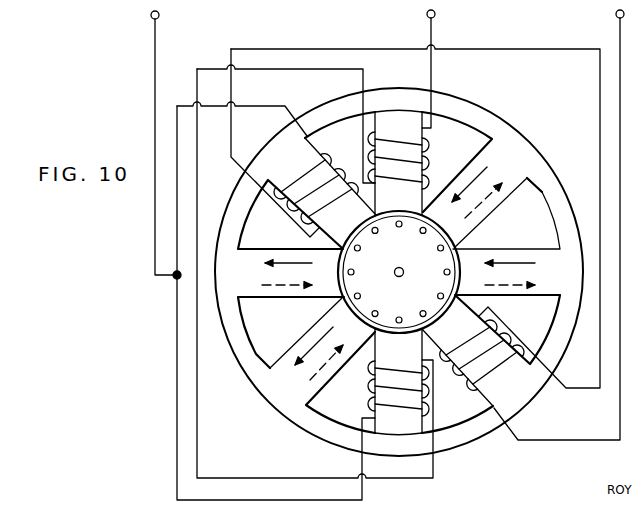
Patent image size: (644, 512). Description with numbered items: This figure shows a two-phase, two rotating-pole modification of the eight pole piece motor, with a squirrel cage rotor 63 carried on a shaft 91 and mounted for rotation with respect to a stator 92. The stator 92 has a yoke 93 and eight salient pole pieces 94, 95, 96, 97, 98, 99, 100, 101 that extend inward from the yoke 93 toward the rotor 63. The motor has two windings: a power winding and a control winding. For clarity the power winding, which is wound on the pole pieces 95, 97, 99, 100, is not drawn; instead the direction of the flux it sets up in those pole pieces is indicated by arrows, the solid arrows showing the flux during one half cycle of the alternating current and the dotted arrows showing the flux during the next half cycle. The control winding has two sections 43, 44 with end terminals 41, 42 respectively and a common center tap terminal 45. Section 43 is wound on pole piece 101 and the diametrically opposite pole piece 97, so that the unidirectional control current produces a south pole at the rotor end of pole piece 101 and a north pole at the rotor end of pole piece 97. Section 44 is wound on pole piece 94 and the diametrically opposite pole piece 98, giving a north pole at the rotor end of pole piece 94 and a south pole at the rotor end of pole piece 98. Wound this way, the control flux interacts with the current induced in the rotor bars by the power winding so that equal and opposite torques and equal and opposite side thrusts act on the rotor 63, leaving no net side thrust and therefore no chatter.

The end terminal 41 is at (615, 14).
The end terminal 42 is at (427, 14).
The control winding section 43 is at (339, 170).
The control winding section 44 is at (429, 162).
The winding center tap terminal 45 is at (151, 15).
The rotor 63 is at (409, 250).
The shaft 91 is at (400, 278).
The stator 92 is at (461, 97).
The yoke 93 is at (476, 113).
The pole piece 94 is at (398, 122).
The pole piece 95 is at (509, 165).
The pole piece 96 is at (544, 275).
The pole piece 97 is at (500, 375).
The pole piece 98 is at (405, 427).
The pole piece 99 is at (300, 377).
The pole piece 100 is at (257, 277).
The pole piece 101 is at (293, 168).